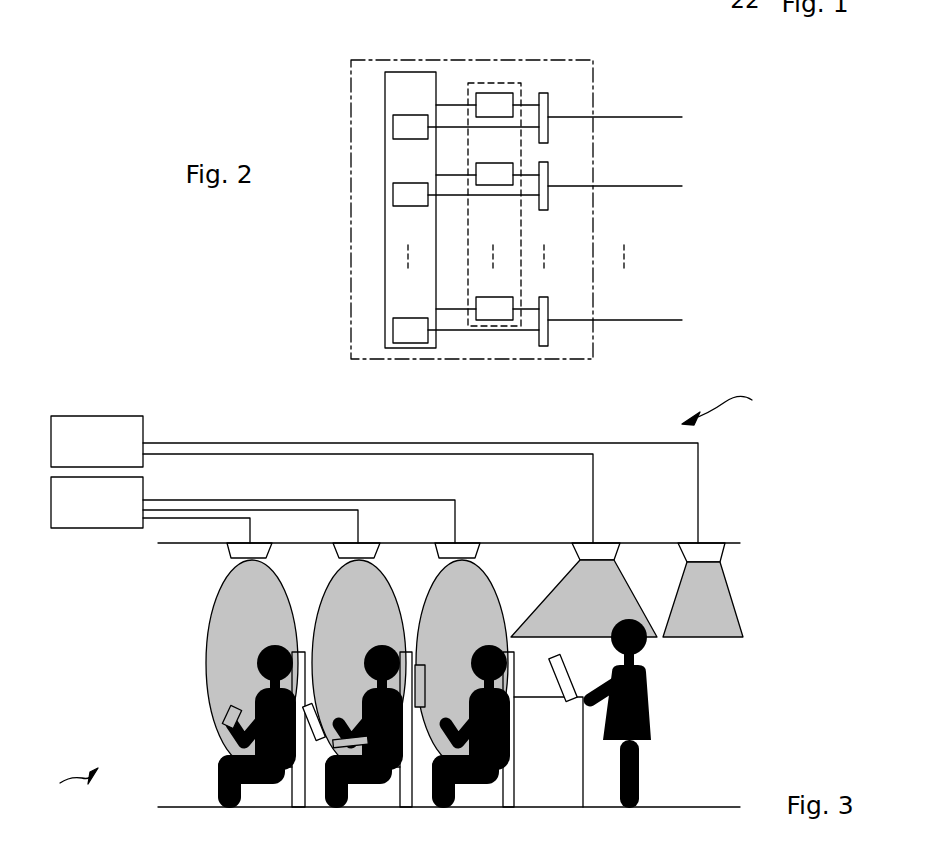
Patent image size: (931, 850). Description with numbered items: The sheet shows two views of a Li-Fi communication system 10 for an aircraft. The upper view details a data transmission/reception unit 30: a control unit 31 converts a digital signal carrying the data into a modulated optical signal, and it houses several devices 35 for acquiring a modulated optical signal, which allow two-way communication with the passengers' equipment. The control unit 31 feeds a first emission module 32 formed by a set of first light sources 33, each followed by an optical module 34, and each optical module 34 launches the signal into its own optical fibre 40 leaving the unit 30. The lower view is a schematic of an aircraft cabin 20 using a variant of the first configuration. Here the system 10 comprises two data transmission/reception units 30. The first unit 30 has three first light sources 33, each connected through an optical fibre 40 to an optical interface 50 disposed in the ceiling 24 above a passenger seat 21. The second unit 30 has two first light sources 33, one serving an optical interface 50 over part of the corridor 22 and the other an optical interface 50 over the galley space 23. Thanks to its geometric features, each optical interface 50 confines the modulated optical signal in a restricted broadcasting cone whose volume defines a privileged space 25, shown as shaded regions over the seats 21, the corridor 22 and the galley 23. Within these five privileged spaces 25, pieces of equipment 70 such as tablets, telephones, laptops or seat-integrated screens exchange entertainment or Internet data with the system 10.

In FIG. 3, the communication system 10 is at (732, 398).
In FIG. 3, the aircraft cabin 20 is at (64, 790).
In FIG. 3, the seat 21 is at (270, 797).
In FIG. 3, the corridor 22 is at (698, 797).
In FIG. 3, the galley space 23 is at (595, 797).
In FIG. 3, the ceiling 24 is at (180, 544).
In FIG. 3, the privileged space 25 is at (238, 622).
In FIG. 2, the data transmission/reception unit 30 is at (351, 186).
In FIG. 3, the data transmission/reception unit 30 is at (96, 438).
In FIG. 2, the control unit 31 is at (385, 150).
In FIG. 2, the first emission module 32 is at (481, 82).
In FIG. 2, the first light source 33 is at (488, 112).
In FIG. 2, the optical module 34 is at (546, 123).
In FIG. 2, the device for acquiring a modulated optical signal 35 is at (398, 128).
In FIG. 2, the optical fibre 40 is at (637, 117).
In FIG. 3, the optical fibre 40 is at (213, 443).
In FIG. 3, the optical interface 50 is at (268, 556).
In FIG. 3, the piece of equipment 70 is at (222, 718).